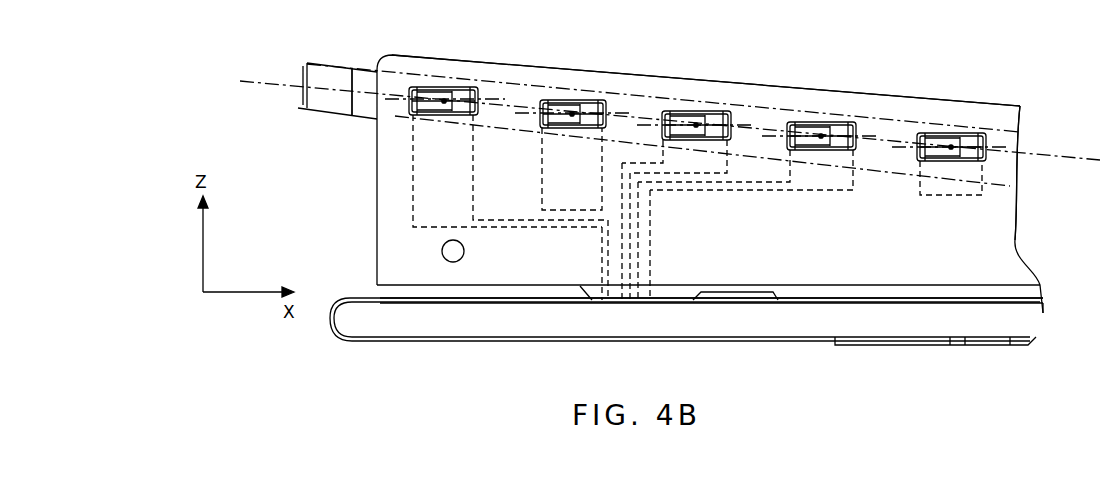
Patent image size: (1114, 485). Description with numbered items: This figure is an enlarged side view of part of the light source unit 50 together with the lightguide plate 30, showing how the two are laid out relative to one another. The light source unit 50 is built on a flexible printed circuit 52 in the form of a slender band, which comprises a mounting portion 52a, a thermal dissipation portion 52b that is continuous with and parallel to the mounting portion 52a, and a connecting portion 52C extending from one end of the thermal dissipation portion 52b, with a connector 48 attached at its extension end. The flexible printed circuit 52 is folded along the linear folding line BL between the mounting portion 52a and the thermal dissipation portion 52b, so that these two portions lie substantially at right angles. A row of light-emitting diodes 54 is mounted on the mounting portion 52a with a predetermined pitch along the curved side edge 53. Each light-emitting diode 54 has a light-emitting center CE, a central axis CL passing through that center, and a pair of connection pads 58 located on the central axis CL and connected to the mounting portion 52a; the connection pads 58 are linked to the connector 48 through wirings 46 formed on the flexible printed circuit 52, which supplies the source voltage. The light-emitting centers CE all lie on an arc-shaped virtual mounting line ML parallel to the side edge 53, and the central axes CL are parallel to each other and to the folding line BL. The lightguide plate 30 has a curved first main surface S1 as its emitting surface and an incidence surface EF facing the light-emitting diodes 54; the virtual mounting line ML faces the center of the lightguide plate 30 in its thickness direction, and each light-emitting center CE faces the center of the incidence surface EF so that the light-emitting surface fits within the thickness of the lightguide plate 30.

The lightguide plate 30 is at (315, 72).
The wirings 46 is at (652, 264).
The connector 48 is at (1003, 347).
The light source unit 50 is at (945, 90).
The flexible printed circuit 52 is at (377, 229).
The mounting portion 52a is at (988, 248).
The thermal dissipation portion 52b is at (1015, 303).
The connecting portion 52C is at (470, 343).
The curved side edge 53 is at (772, 86).
The light-emitting diodes 54 is at (450, 87).
The connection pads 58 is at (413, 116).
The folding line BL is at (1010, 298).
The light-emitting center CE is at (446, 99).
The central axis CL is at (399, 96).
The incidence surface EF is at (365, 112).
The virtual mounting line ML is at (1060, 157).
The first main surface S1 is at (625, 90).